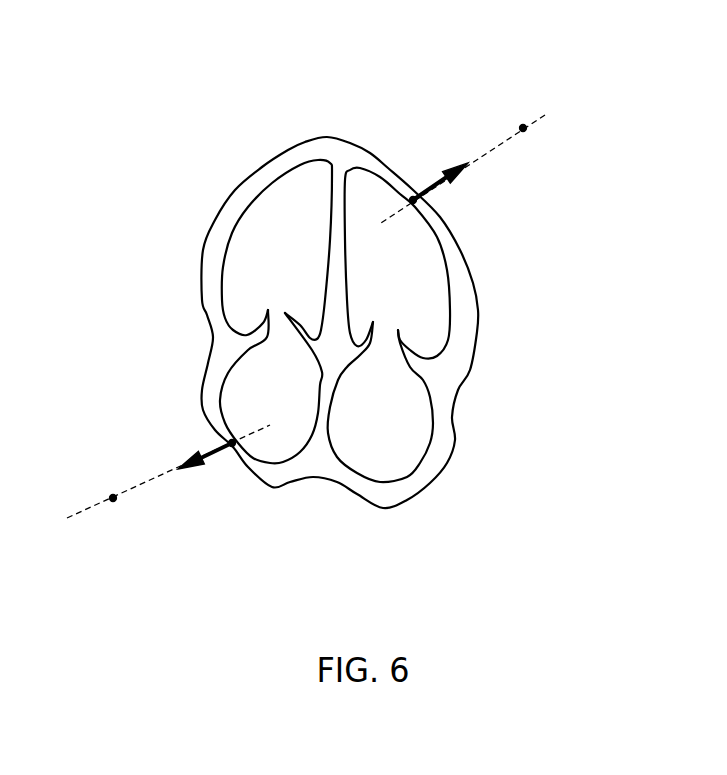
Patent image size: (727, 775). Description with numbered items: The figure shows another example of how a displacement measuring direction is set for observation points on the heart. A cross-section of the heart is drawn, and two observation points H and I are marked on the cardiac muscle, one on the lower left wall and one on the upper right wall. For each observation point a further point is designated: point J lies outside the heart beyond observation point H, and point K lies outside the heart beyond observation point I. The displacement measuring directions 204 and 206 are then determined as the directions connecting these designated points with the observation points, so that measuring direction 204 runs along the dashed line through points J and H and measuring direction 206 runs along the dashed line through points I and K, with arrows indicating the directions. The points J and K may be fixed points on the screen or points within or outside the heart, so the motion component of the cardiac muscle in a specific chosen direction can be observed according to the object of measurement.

The displacement measuring direction 204 is at (157, 482).
The displacement measuring direction 206 is at (480, 157).
The observation point H is at (232, 443).
The observation point I is at (413, 200).
The point for determining displacement measuring direction J is at (113, 498).
The point for determining displacement measuring direction K is at (523, 128).